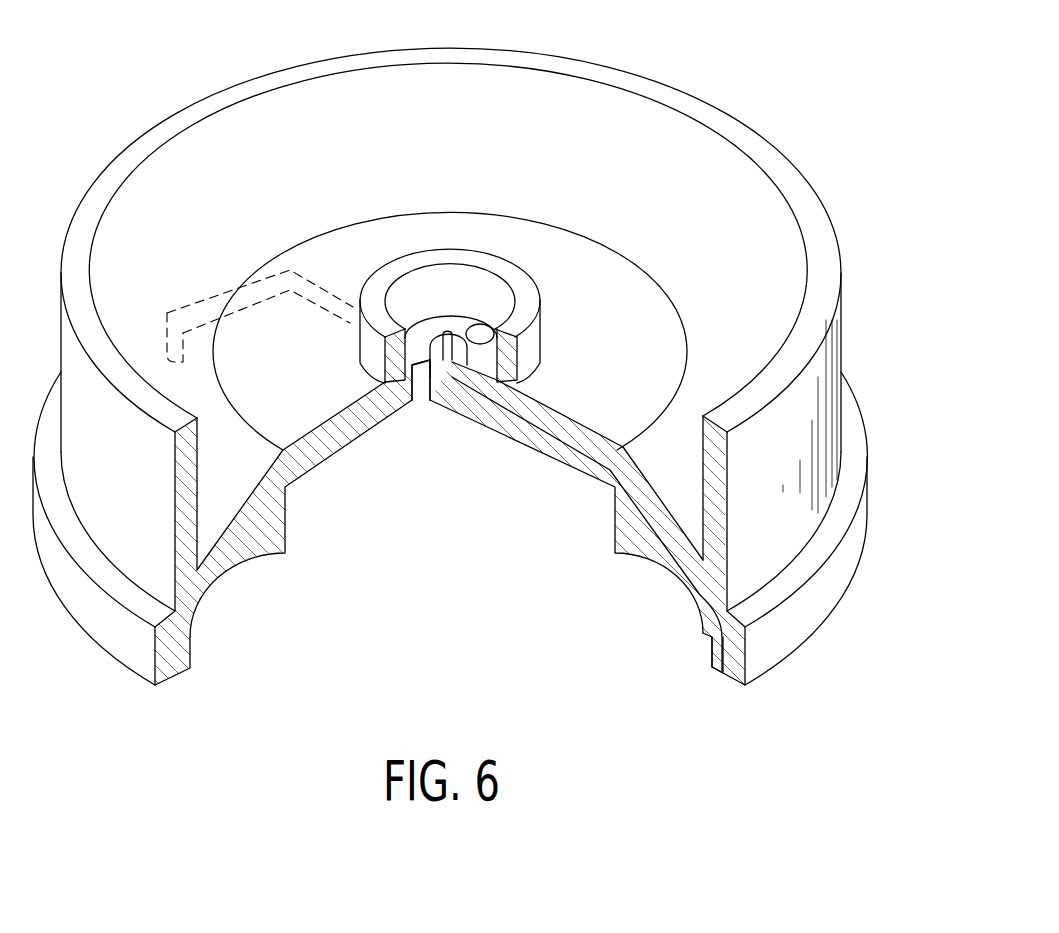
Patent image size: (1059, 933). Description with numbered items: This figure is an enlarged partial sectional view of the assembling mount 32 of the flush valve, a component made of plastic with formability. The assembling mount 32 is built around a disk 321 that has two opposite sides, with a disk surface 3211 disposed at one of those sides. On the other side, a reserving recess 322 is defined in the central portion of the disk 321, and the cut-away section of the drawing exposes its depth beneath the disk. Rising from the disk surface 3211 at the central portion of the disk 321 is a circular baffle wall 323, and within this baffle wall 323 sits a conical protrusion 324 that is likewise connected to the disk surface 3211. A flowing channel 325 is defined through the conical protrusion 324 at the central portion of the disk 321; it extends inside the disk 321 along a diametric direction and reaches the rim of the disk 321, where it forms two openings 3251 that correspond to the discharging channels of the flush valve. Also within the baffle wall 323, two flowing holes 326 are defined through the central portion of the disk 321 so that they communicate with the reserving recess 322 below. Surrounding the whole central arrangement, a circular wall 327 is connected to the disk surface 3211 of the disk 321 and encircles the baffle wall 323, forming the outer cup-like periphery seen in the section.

The assembling mount 32 is at (692, 62).
The disk 321 is at (747, 288).
The disk surface 3211 is at (648, 307).
The reserving recess 322 is at (614, 520).
The baffle wall 323 is at (473, 257).
The conical protrusion 324 is at (473, 353).
The flowing channel 325 is at (455, 340).
The flowing holes 326 is at (485, 322).
The circular wall 327 is at (208, 110).
The openings 3251 is at (175, 347).